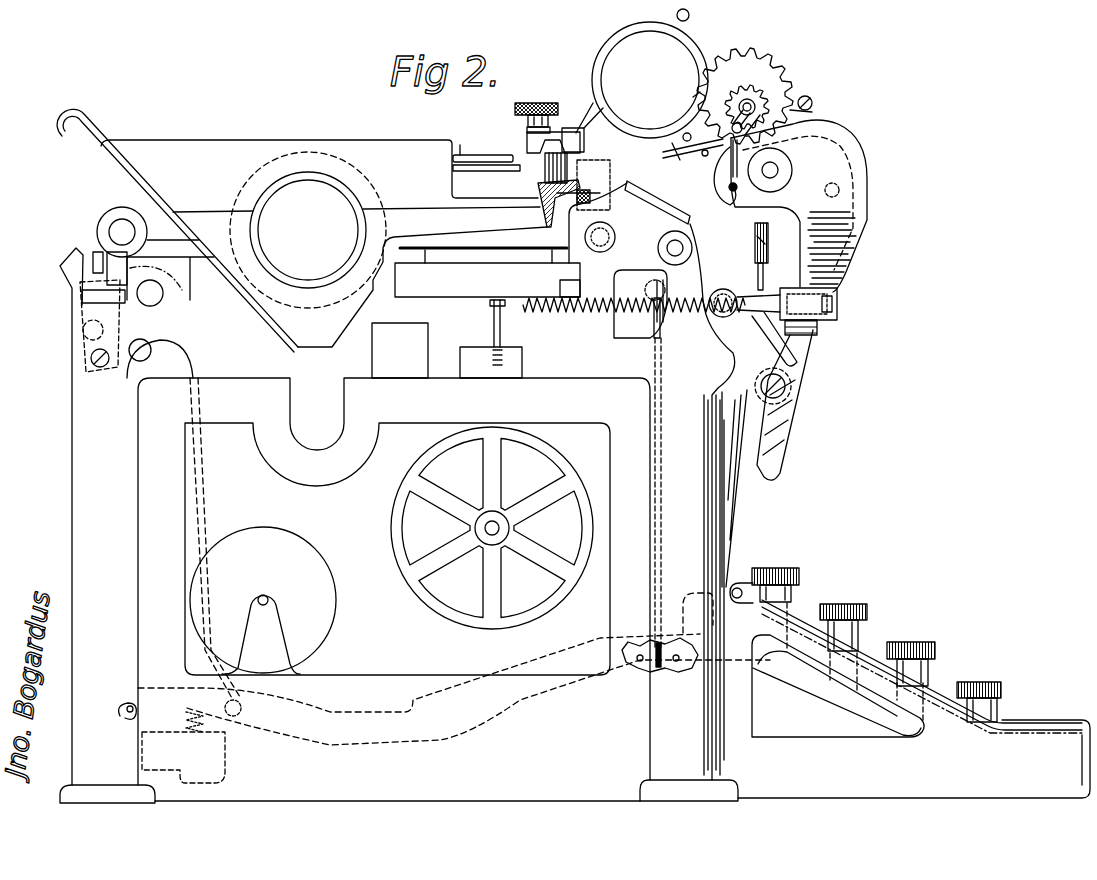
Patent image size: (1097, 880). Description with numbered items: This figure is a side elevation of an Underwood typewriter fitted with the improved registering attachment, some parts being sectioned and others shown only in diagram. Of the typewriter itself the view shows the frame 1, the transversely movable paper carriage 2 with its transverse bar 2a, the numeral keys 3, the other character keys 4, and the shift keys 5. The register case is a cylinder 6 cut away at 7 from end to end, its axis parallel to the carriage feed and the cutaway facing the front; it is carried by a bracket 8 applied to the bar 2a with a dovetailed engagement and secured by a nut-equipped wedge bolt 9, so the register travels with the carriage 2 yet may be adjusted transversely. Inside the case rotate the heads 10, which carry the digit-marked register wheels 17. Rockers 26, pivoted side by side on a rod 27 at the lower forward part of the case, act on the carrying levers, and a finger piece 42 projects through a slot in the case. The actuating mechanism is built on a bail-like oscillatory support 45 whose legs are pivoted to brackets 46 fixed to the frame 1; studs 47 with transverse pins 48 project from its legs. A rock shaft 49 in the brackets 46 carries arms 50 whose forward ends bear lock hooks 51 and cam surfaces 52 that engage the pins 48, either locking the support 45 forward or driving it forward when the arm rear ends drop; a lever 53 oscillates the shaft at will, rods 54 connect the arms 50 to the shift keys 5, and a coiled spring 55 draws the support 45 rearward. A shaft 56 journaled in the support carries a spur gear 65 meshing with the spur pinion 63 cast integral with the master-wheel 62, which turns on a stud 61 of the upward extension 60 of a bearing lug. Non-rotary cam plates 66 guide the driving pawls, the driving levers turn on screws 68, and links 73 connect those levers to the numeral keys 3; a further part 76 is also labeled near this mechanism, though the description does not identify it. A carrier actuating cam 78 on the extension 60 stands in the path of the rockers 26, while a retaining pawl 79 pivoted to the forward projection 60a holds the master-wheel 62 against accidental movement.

The frame 1 is at (85, 497).
The paper carriage 2 is at (308, 230).
The transverse bar 2a is at (547, 150).
The numeral keys 3 is at (779, 569).
The character keys 4 is at (868, 612).
The shift keys 5 is at (982, 682).
The cylinder 6 is at (597, 52).
The cutaway portion 7 is at (730, 68).
The bracket 8 is at (583, 127).
The wedge bolt 9 is at (515, 112).
The heads 10 is at (650, 80).
The register wheels 17 is at (693, 97).
The rockers 26 is at (690, 150).
The rod 27 is at (684, 135).
The finger piece 42 is at (689, 15).
The oscillatory support 45 is at (835, 250).
The brackets 46 is at (790, 450).
The studs 47 is at (770, 294).
The pins 48 is at (730, 297).
The rock shaft 49 is at (721, 316).
The arms 50 is at (700, 300).
The lock hooks 51 is at (795, 325).
The cam surfaces 52 is at (775, 335).
The lever 53 is at (792, 387).
The rods 54 is at (654, 325).
The coiled spring 55 is at (550, 330).
The shaft 56 is at (778, 170).
The upward extension 60 is at (720, 168).
The forward projection 60a is at (812, 100).
The stud 61 is at (750, 97).
The master-wheel 62 is at (775, 78).
The spur pinion 63 is at (783, 103).
The spur gear 65 is at (793, 107).
The cam plate 66 is at (746, 218).
The screws 68 is at (840, 190).
The links 73 is at (733, 208).
The finger 76 is at (729, 190).
The carrier actuating cam 78 is at (704, 157).
The retaining pawl 79 is at (815, 111).